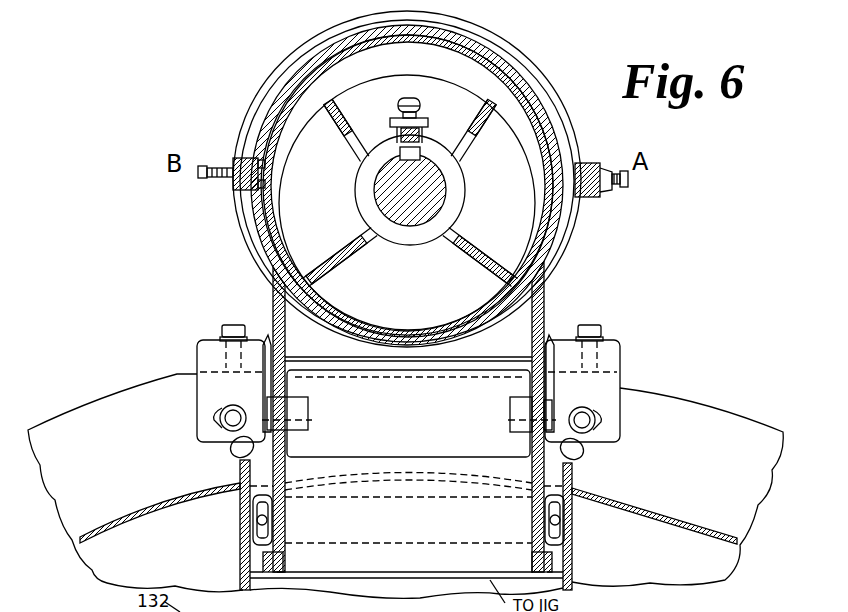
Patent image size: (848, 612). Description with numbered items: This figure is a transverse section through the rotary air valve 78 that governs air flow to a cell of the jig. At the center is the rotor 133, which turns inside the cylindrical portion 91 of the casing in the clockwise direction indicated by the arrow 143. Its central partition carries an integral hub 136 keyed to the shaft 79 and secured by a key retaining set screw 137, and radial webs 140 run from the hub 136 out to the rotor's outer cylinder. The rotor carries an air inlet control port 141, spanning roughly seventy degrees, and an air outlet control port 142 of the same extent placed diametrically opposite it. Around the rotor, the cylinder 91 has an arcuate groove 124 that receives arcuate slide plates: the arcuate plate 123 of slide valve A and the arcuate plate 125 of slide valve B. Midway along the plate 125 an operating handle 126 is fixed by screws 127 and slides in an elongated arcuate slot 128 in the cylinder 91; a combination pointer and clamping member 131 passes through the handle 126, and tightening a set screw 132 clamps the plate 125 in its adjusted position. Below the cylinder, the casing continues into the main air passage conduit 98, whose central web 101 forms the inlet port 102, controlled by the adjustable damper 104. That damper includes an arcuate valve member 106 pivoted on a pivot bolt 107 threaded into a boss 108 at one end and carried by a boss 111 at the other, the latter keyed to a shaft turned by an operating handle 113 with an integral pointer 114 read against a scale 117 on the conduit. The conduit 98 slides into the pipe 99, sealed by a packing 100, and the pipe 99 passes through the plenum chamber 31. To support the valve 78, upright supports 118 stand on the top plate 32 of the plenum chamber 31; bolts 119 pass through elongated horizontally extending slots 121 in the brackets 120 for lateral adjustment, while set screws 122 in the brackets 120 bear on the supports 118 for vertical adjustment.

The rotary air valve 78 is at (228, 92).
The shaft 79 is at (440, 190).
The cylindrical portion of the casing 91 is at (524, 70).
The main air passage conduit 98 is at (268, 523).
The pipe 99 is at (244, 565).
The packing 100 is at (570, 552).
The central web 101 is at (367, 342).
The inlet port 102 is at (405, 455).
The adjustable damper 104 is at (430, 470).
The arcuate valve member 106 is at (408, 413).
The pivot bolt 107 is at (264, 403).
The boss 108 is at (305, 399).
The boss 111 is at (512, 400).
The operating handle 113 is at (242, 452).
The pointer 114 is at (265, 345).
The scale 117 is at (272, 330).
The upright supports 118 is at (715, 415).
The bolts 119 is at (228, 420).
The brackets 120 is at (200, 352).
The elongated horizontally extending slots 121 is at (222, 412).
The set screws 122 is at (231, 323).
The arcuate plate 123 is at (555, 232).
The arcuate groove 124 is at (540, 90).
The arcuate plate 125 is at (318, 92).
The operating handle 126 is at (238, 158).
The screws 127 is at (262, 186).
The elongated arcuate slot 128 is at (255, 224).
The combination pointer and clamping member 131 is at (238, 180).
The set screw 132 is at (200, 173).
The rotor 133 is at (492, 158).
The hub 136 is at (420, 247).
The key retaining set screw 137 is at (410, 97).
The radial webs 140 is at (337, 114).
The air inlet control port 141 is at (410, 338).
The air outlet control port 142 is at (525, 72).
The arrow 143 is at (337, 143).
The plenum chamber 31 is at (335, 486).
The top plate 32 is at (128, 522).